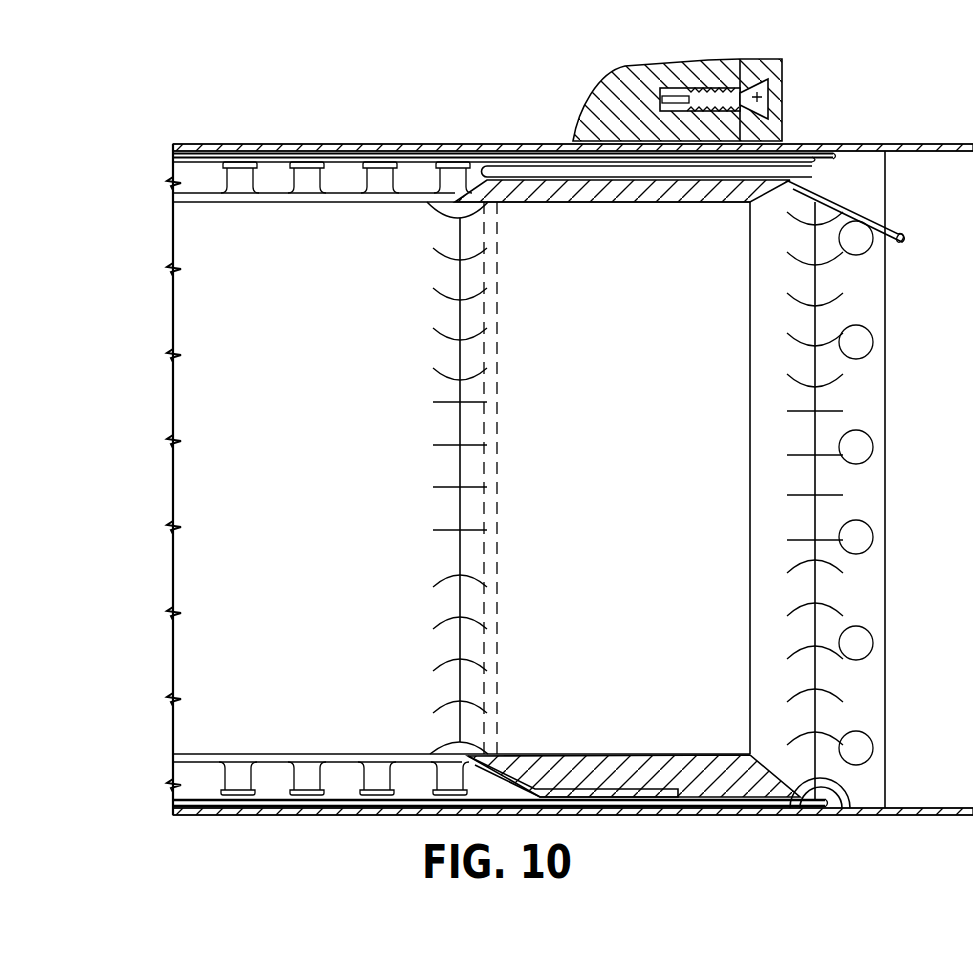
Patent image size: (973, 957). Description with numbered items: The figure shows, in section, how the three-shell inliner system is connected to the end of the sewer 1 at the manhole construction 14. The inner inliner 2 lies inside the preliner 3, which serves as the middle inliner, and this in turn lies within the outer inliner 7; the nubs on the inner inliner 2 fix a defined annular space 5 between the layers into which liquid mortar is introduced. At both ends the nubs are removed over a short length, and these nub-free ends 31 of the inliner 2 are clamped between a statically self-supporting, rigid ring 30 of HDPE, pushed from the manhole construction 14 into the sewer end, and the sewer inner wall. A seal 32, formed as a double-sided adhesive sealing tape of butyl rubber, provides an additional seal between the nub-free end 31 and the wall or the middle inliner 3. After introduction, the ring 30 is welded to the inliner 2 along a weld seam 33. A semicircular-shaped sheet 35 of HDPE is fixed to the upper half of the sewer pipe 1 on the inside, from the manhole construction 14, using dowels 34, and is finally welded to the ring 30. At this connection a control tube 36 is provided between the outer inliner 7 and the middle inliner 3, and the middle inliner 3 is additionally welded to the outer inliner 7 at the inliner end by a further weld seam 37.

The sewer 1 is at (635, 82).
The inner inliner 2 is at (318, 197).
The preliner 3 is at (333, 803).
The annular space 5 is at (350, 178).
The outer inliner 7 is at (868, 302).
The manhole construction 14 is at (970, 633).
The rigid ring 30 is at (598, 768).
The nub-free ends 31 is at (533, 755).
The seal 32 is at (680, 752).
The weld seam 33 is at (450, 745).
The dowels 34 is at (715, 95).
The semicircular-shaped sheet 35 is at (840, 161).
The control tube 36 is at (868, 208).
The weld seam 37 is at (843, 780).